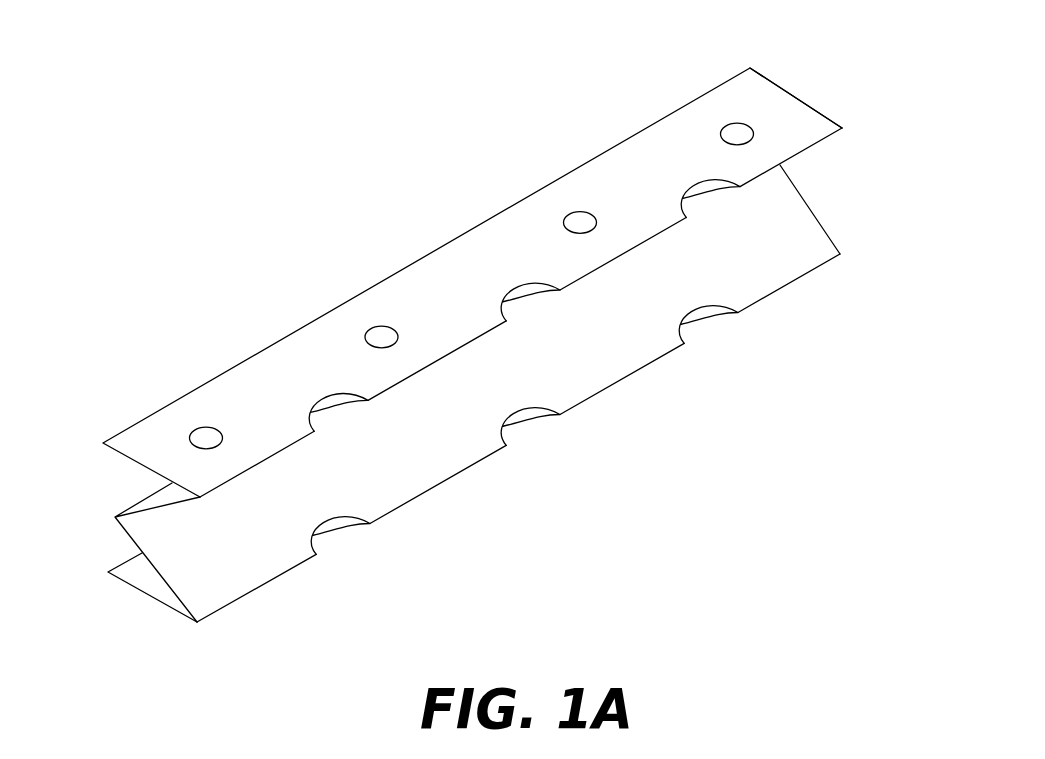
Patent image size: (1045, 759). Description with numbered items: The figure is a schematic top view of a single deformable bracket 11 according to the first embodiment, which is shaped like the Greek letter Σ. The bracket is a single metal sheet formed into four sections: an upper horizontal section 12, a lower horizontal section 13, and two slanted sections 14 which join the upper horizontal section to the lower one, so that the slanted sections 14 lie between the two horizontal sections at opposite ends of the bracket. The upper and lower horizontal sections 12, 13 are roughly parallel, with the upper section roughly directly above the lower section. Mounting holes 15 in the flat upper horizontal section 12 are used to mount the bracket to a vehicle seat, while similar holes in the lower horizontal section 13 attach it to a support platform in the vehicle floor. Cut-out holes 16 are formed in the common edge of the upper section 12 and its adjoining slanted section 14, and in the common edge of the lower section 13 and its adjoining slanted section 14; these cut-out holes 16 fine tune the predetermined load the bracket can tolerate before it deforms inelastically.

The deformable bracket 11 is at (292, 332).
The upper horizontal section 12 is at (807, 102).
The lower horizontal section 13 is at (143, 592).
The slanted section 14 is at (132, 542).
The mounting holes 15 is at (735, 130).
The cut-out holes 16 is at (690, 185).